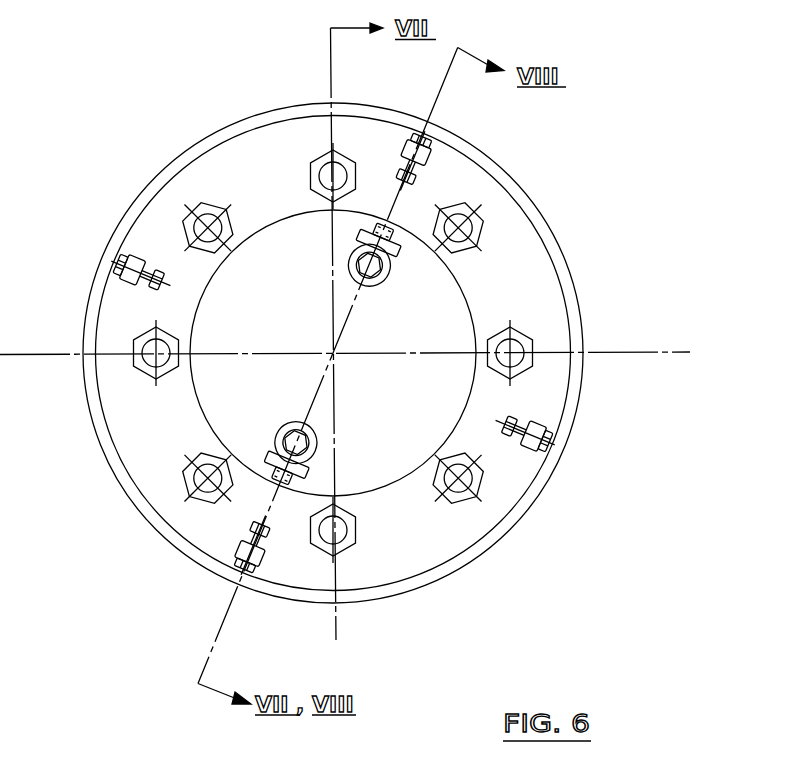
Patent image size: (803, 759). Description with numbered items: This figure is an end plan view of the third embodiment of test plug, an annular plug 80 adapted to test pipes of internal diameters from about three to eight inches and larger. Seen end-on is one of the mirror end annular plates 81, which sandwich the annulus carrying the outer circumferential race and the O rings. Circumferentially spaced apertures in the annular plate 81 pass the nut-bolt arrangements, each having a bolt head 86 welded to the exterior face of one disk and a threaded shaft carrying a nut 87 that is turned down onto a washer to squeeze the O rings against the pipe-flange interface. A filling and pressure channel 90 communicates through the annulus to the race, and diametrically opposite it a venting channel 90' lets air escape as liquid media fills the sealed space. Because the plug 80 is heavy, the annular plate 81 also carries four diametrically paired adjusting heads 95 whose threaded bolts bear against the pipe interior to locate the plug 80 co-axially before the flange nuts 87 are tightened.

The annular plug 80 is at (587, 378).
The annular plate 81 is at (550, 277).
The bolt head 86 is at (480, 220).
The nut 87 is at (532, 337).
The filling and pressure channel 90 is at (277, 435).
The venting channel 90' is at (385, 272).
The adjusting head 95 is at (420, 162).